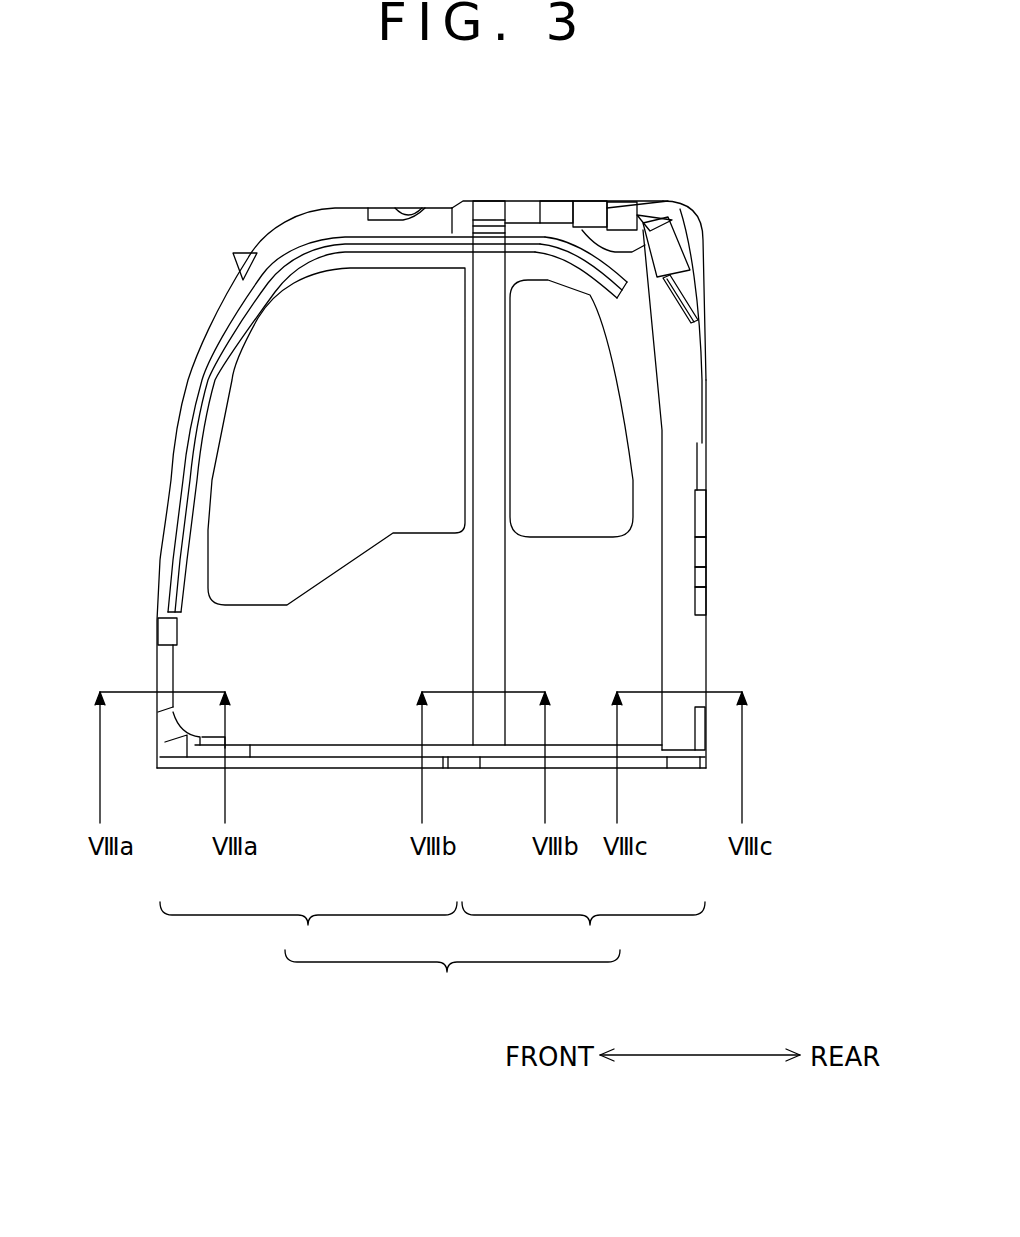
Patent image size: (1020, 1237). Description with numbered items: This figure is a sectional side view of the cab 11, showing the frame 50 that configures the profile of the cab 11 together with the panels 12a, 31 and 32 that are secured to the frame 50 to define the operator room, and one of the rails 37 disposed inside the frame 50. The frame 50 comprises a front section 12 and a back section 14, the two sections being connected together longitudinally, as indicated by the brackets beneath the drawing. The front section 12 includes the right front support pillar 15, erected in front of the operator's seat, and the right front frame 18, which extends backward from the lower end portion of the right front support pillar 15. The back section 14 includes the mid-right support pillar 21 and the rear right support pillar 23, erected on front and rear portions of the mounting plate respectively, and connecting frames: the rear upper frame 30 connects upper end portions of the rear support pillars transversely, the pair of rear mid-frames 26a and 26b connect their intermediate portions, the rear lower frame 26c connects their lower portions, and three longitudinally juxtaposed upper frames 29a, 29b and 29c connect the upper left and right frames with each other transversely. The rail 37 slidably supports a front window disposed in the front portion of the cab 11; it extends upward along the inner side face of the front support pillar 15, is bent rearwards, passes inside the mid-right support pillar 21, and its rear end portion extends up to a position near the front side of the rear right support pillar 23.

The cab 11 is at (186, 238).
The front section 12 is at (308, 931).
The panel 12a is at (345, 680).
The back section 14 is at (583, 931).
The right front support pillar 15 is at (160, 546).
The right front frame 18 is at (340, 750).
The mid-right support pillar 21 is at (487, 607).
The rear right support pillar 23 is at (705, 340).
The rear mid-frame 26a is at (710, 514).
The rear mid-frame 26b is at (710, 597).
The rear lower frame 26c is at (707, 738).
The upper frame 29a is at (503, 228).
The upper frame 29b is at (578, 224).
The upper frame 29c is at (650, 212).
The rear upper frame 30 is at (692, 282).
The panel 31 is at (598, 680).
The panel 32 is at (697, 222).
The rail 37 is at (326, 237).
The frame 50 is at (452, 979).